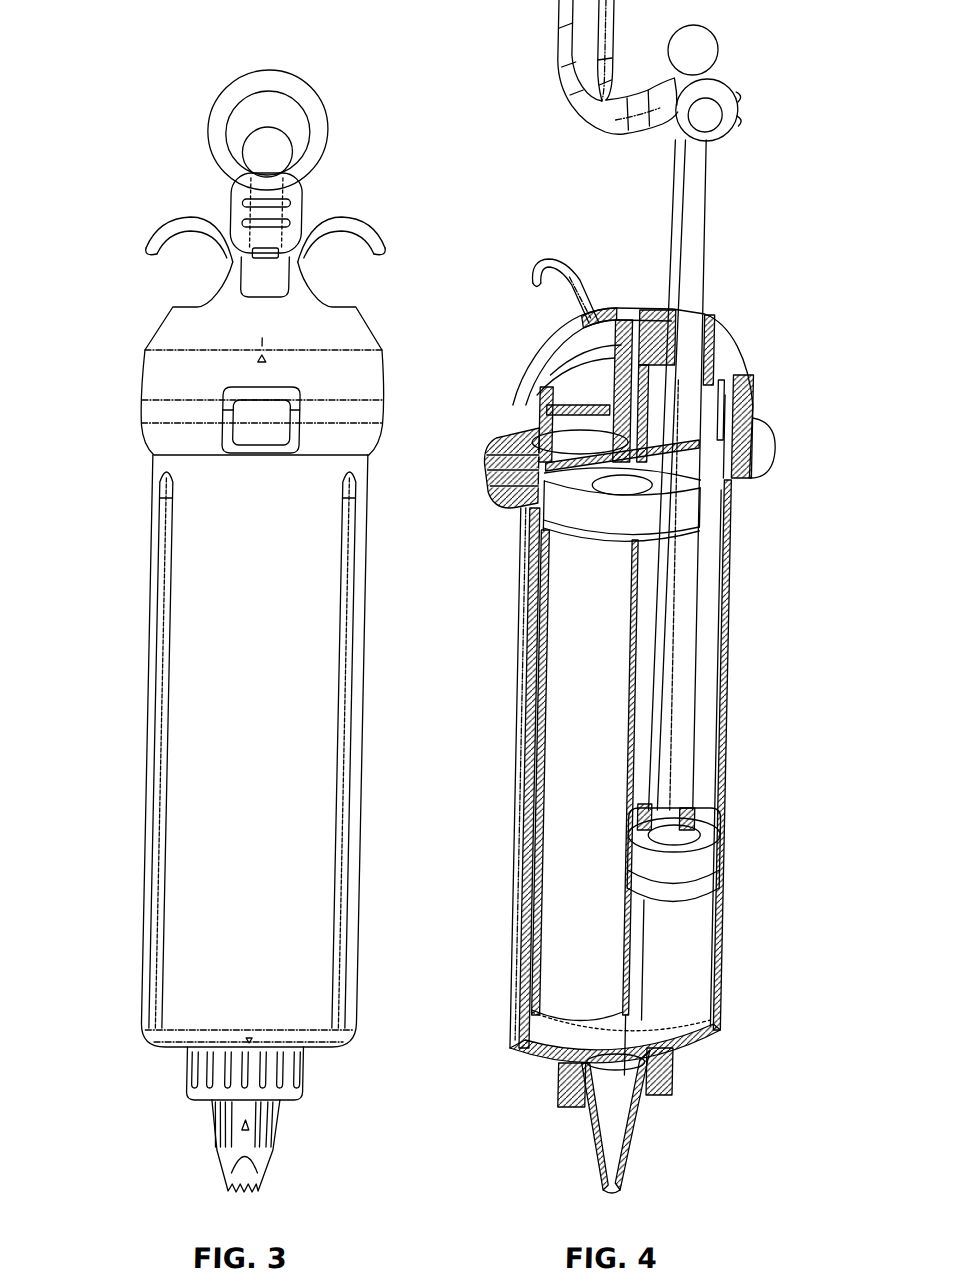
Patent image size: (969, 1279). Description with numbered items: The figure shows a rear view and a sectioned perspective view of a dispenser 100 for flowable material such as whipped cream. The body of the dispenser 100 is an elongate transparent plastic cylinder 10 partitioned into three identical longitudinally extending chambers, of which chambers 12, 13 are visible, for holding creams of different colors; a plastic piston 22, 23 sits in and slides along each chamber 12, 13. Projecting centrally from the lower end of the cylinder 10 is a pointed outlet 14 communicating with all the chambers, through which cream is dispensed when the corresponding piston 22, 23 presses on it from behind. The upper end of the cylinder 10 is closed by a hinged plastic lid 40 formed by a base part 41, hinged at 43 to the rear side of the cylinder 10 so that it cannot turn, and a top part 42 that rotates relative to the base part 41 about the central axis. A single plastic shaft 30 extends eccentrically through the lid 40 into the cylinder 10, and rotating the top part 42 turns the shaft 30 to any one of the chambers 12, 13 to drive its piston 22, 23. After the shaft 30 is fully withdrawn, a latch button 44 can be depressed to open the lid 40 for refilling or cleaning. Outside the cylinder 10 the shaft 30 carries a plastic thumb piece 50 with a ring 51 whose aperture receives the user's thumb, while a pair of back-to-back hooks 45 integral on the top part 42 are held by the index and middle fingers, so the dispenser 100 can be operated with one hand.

In FIG. 3, the dispenser 100 is at (225, 623).
In FIG. 3, the cylinder 10 is at (367, 760).
In FIG. 4, the cylinder 10 is at (744, 945).
In FIG. 4, the chamber 12 is at (722, 752).
In FIG. 4, the chamber 13 is at (580, 735).
In FIG. 3, the pointed outlet 14 is at (296, 1153).
In FIG. 4, the pointed outlet 14 is at (643, 1130).
In FIG. 4, the piston 22 is at (727, 870).
In FIG. 4, the piston 23 is at (590, 510).
In FIG. 4, the shaft 30 is at (696, 650).
In FIG. 3, the lid 40 is at (392, 360).
In FIG. 4, the lid 40 is at (760, 378).
In FIG. 4, the base part 41 is at (755, 415).
In FIG. 4, the top part 42 is at (722, 345).
In FIG. 4, the hinge 43 is at (779, 458).
In FIG. 4, the latch button 44 is at (494, 455).
In FIG. 3, the hooks 45 is at (165, 234).
In FIG. 4, the hooks 45 is at (572, 268).
In FIG. 3, the thumb piece 50 is at (342, 190).
In FIG. 4, the thumb piece 50 is at (759, 50).
In FIG. 3, the ring 51 is at (302, 92).